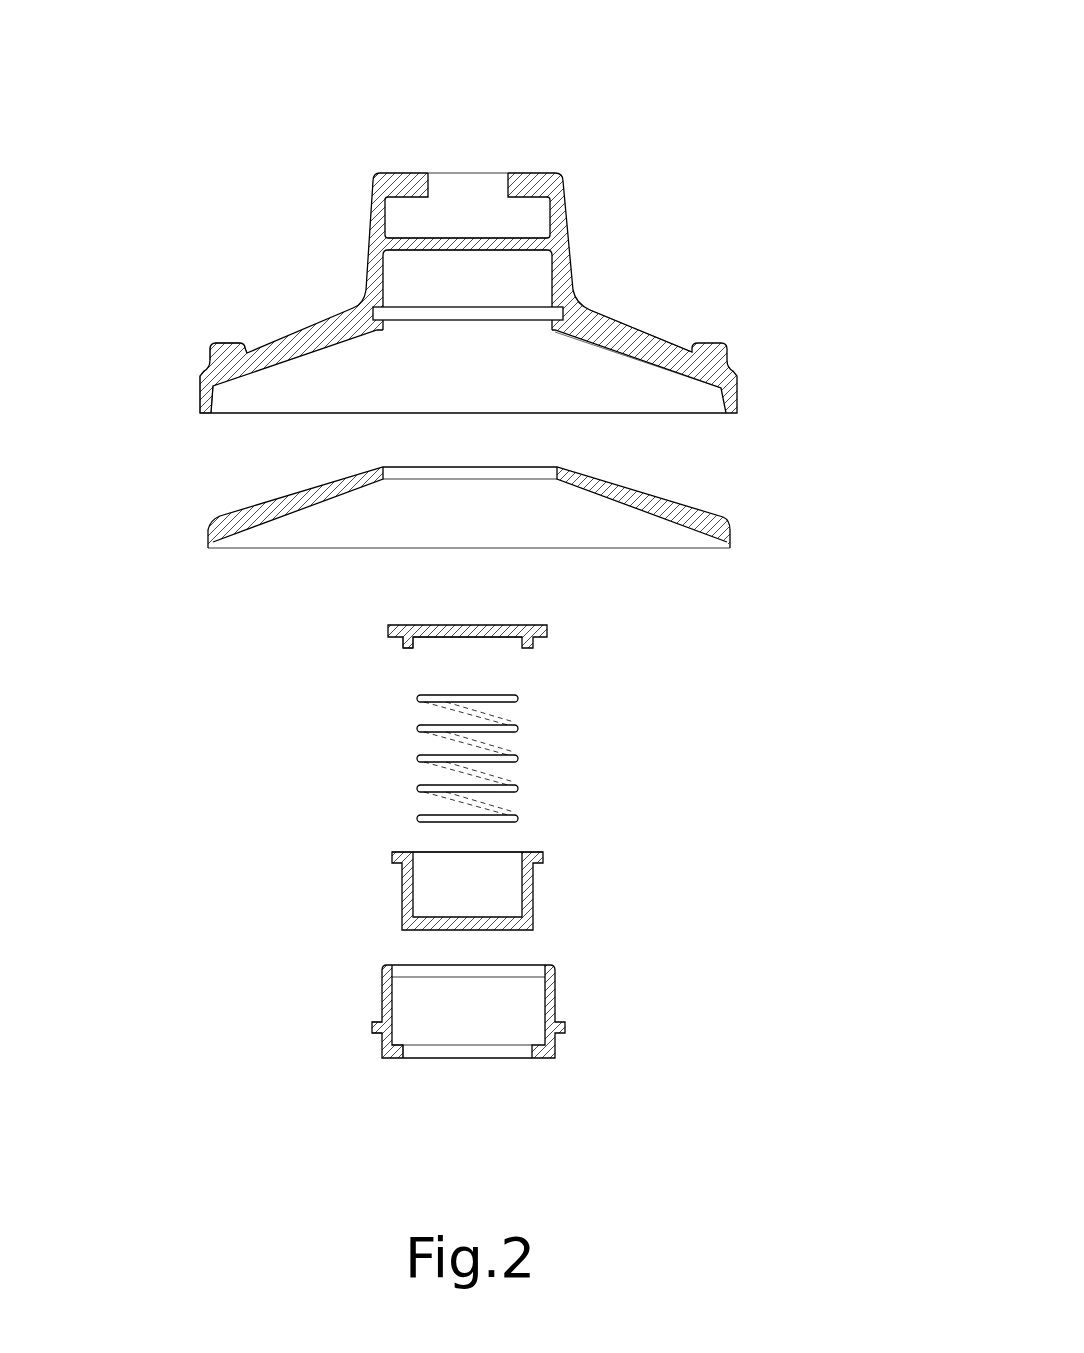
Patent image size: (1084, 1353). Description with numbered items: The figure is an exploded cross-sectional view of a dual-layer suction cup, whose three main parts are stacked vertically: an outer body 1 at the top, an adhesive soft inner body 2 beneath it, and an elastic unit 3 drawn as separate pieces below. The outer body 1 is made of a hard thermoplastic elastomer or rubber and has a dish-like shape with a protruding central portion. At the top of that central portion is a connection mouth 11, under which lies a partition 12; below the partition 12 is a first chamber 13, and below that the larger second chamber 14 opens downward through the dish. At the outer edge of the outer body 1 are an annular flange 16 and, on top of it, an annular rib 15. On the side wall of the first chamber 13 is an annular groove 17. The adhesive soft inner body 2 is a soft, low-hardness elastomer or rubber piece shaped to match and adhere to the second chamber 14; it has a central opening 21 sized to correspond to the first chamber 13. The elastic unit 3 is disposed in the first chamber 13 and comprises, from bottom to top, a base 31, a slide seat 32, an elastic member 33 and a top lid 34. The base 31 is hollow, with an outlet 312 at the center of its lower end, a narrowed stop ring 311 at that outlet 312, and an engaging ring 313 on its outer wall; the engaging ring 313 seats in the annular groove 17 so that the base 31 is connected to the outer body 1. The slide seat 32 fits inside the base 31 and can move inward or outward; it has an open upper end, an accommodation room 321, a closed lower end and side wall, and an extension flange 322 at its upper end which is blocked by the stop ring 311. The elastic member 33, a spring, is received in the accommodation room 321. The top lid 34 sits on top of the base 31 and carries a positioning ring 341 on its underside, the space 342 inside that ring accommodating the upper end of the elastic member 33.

The outer body 1 is at (712, 100).
The connection mouth 11 is at (492, 218).
The partition 12 is at (418, 240).
The first chamber 13 is at (527, 283).
The second chamber 14 is at (623, 378).
The annular rib 15 is at (227, 348).
The annular flange 16 is at (205, 398).
The annular groove 17 is at (415, 312).
The adhesive soft inner body 2 is at (728, 465).
The opening 21 is at (417, 472).
The elastic unit 3 is at (722, 1060).
The base 31 is at (577, 990).
The stop ring 311 is at (400, 1055).
The outlet 312 is at (495, 1052).
The engaging ring 313 is at (373, 1028).
The slide seat 32 is at (578, 866).
The accommodation room 321 is at (452, 890).
The extension flange 322 is at (393, 860).
The elastic member 33 is at (577, 744).
The top lid 34 is at (578, 628).
The positioning ring 341 is at (405, 642).
The space 342 is at (437, 640).